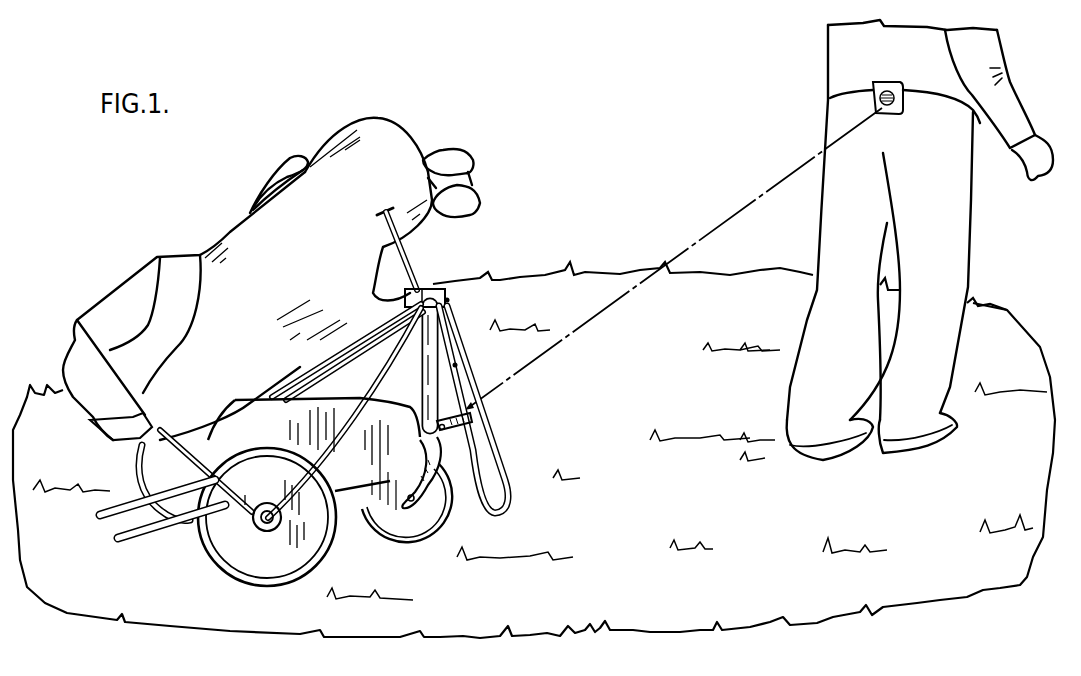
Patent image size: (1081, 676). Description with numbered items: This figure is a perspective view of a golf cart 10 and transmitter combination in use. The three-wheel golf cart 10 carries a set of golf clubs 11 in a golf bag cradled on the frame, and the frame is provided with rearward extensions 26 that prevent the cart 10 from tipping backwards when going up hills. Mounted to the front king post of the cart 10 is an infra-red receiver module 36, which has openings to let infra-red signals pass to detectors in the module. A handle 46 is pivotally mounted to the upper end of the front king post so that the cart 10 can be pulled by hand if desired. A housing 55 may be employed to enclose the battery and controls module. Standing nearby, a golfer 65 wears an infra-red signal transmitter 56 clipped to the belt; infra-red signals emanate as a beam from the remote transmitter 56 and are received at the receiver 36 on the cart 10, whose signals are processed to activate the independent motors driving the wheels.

The golf cart 10 is at (458, 260).
The set of golf clubs 11 is at (348, 110).
The rearward extensions 26 is at (126, 533).
The infra-red receiver module 36 is at (474, 430).
The handle 46 is at (490, 505).
The housing 55 is at (282, 444).
The infra-red signal transmitter 56 is at (850, 75).
The golfer 65 is at (781, 126).